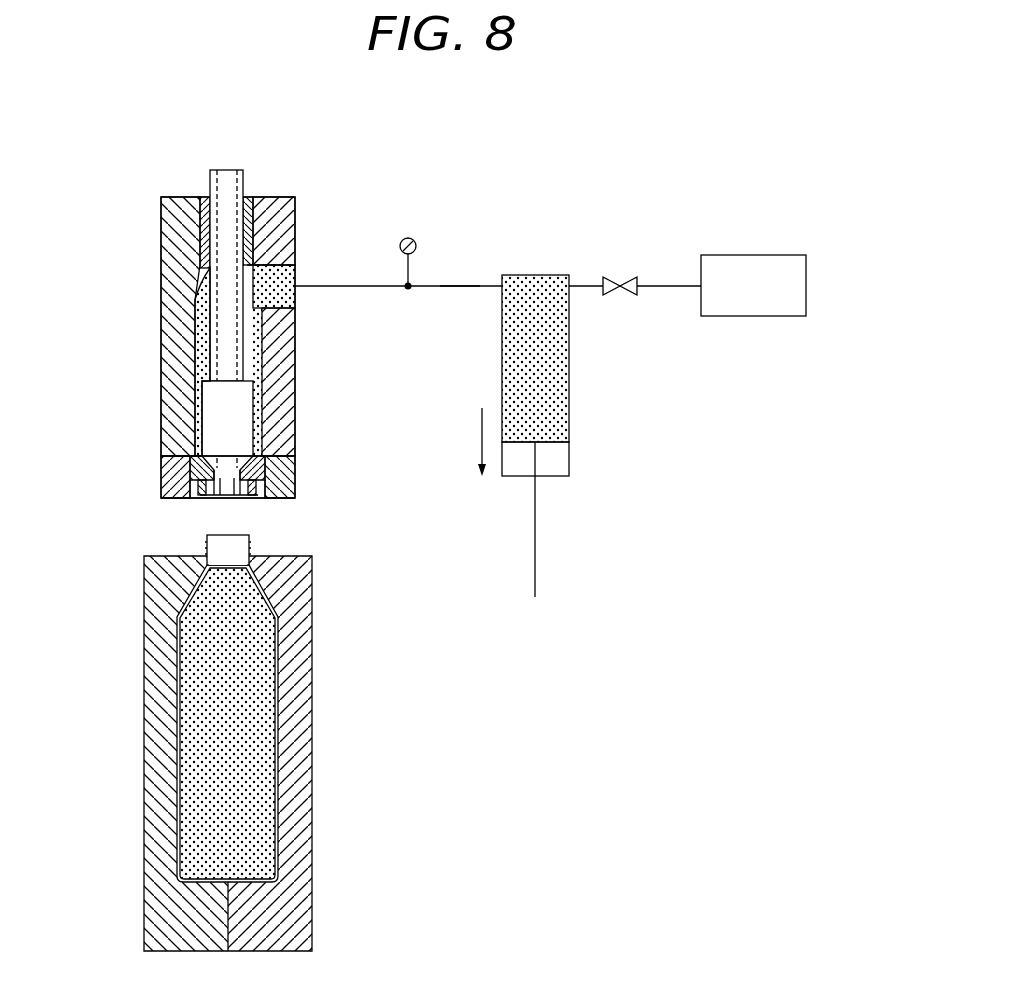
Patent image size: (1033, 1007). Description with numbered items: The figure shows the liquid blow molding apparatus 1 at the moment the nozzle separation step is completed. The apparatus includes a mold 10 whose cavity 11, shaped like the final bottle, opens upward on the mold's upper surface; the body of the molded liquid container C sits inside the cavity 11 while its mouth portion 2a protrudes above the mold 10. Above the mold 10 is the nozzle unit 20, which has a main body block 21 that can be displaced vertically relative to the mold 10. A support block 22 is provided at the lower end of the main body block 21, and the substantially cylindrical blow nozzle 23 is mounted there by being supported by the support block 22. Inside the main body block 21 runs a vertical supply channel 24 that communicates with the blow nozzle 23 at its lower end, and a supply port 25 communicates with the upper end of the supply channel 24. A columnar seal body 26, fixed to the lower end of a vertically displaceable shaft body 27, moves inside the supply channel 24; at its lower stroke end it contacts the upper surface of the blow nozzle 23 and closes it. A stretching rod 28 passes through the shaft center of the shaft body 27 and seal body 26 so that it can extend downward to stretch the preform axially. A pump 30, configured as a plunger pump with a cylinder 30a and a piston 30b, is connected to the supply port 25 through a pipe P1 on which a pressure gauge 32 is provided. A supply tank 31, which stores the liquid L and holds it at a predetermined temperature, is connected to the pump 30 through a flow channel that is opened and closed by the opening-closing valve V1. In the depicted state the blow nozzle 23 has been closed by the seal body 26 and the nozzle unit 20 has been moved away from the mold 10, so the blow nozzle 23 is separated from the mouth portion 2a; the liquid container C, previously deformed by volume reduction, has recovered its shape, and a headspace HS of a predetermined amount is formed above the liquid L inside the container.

The liquid blow molding apparatus 1 is at (650, 117).
The mold 10 is at (318, 800).
The cavity 11 is at (272, 760).
The mouth portion 2a is at (250, 543).
The liquid container C is at (288, 680).
The headspace HS is at (228, 560).
The liquid L is at (255, 352).
The nozzle unit 20 is at (278, 195).
The main body block 21 is at (172, 244).
The support block 22 is at (175, 472).
The blow nozzle 23 is at (267, 463).
The supply channel 24 is at (265, 320).
The supply port 25 is at (297, 272).
The seal body 26 is at (245, 413).
The shaft body 27 is at (209, 183).
The stretching rod 28 is at (225, 488).
The pump 30 is at (576, 397).
The cylinder 30a is at (570, 353).
The piston 30b is at (524, 443).
The supply tank 31 is at (768, 297).
The pressure gauge 32 is at (409, 237).
The pipe P1 is at (459, 282).
The opening-closing valve V1 is at (617, 275).